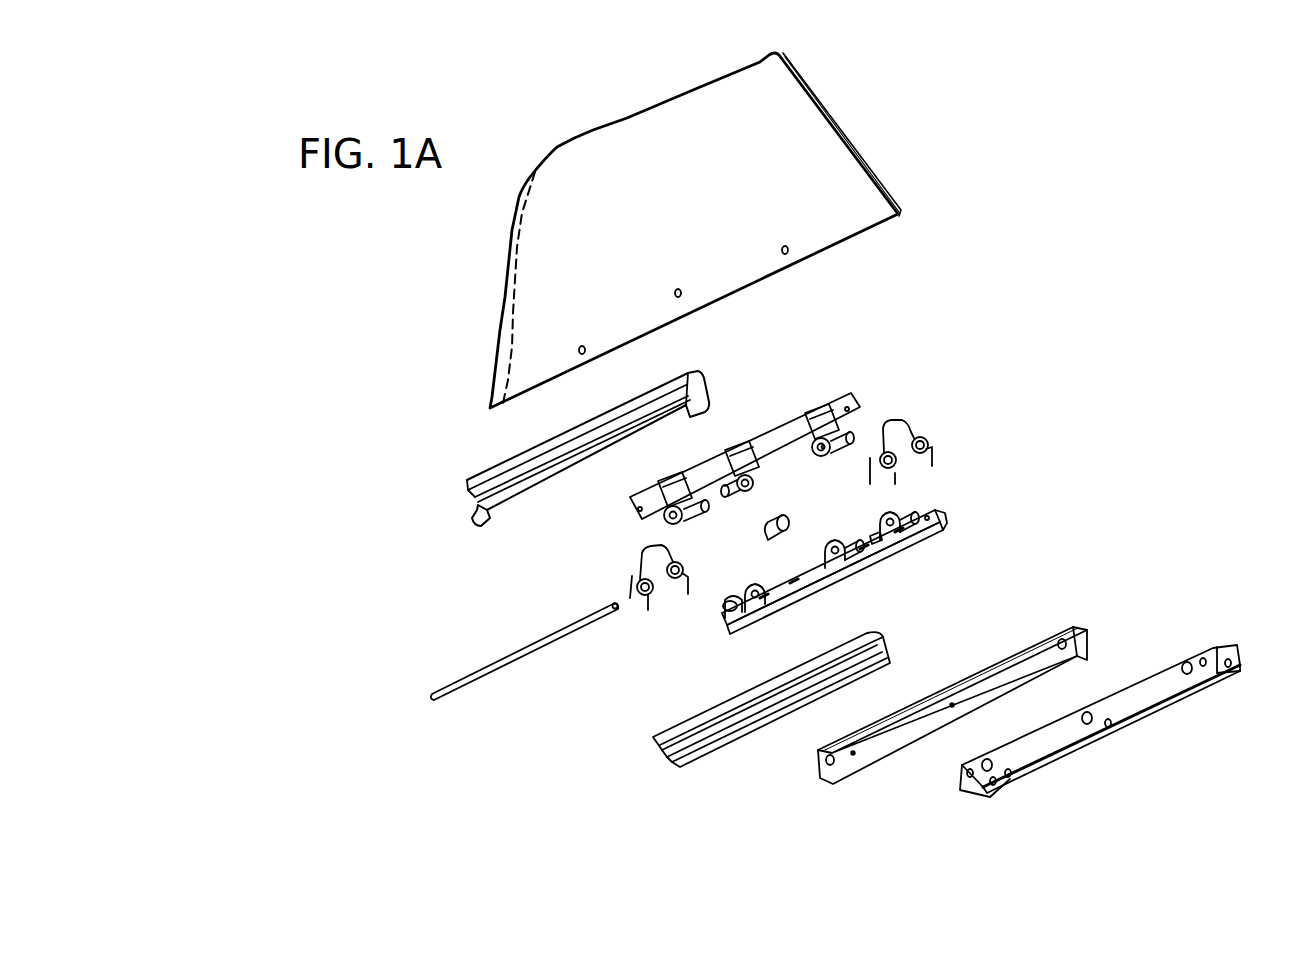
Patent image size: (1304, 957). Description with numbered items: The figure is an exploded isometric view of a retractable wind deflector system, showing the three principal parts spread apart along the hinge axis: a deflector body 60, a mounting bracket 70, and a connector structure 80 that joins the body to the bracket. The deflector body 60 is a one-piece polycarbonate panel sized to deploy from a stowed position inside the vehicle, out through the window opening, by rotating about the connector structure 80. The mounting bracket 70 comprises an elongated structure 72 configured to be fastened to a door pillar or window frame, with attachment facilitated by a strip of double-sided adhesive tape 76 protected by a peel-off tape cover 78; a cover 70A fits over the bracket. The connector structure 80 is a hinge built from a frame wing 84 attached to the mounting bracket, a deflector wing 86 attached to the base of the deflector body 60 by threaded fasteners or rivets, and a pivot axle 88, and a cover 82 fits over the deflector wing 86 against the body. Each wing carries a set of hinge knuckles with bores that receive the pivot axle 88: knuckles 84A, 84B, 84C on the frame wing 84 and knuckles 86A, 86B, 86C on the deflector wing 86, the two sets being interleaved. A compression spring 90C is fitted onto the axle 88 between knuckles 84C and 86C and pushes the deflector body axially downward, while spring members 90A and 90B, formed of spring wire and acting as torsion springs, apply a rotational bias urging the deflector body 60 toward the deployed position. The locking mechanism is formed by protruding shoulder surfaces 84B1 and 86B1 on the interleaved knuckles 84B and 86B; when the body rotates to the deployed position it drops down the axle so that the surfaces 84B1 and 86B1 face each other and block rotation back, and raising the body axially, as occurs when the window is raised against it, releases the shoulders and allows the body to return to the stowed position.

The deflector body 60 is at (853, 110).
The mounting bracket 70 is at (915, 593).
The cover 70A is at (647, 753).
The elongated structure 72 is at (1105, 615).
The double-sided adhesive tape 76 is at (1012, 747).
The peel-off tape cover 78 is at (1040, 767).
The connector structure 80 is at (755, 335).
The cover 82 is at (713, 393).
The frame wing 84 is at (797, 576).
The knuckle 84A is at (897, 503).
The knuckle 84B is at (875, 540).
The shoulder surface 84B1 is at (880, 567).
The knuckle 84C is at (813, 553).
The deflector wing 86 is at (707, 474).
The knuckle 86A is at (843, 445).
The knuckle 86B is at (818, 456).
The shoulder surface 86B1 is at (816, 447).
The knuckle 86C is at (737, 493).
The pivot axle 88 is at (465, 690).
The spring member 90A is at (882, 463).
The spring member 90B is at (627, 580).
The compression spring 90C is at (770, 540).